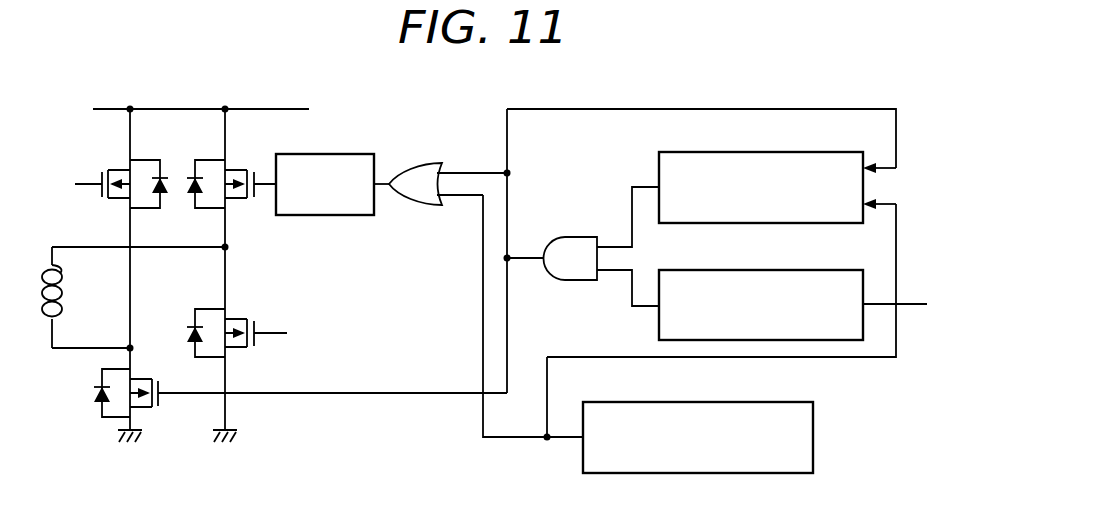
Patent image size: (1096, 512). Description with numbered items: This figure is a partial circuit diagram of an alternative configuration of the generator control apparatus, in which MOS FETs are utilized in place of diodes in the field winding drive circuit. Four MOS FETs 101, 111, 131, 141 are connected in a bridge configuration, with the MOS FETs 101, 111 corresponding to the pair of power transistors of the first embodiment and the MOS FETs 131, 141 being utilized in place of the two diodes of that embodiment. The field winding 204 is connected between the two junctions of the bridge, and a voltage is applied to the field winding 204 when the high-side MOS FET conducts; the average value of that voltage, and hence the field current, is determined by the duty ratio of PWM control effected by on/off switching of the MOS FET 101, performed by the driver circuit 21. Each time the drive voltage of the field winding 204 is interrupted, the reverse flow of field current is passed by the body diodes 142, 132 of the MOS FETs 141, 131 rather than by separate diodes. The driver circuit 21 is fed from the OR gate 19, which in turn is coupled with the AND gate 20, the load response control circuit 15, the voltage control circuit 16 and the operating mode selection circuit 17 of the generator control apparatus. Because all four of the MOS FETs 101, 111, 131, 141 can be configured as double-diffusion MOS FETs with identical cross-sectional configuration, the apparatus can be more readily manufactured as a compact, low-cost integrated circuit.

The MOS FET 141 is at (127, 169).
The MOS FET 101 is at (229, 169).
The body diode 142 is at (164, 197).
The field winding 204 is at (63, 290).
The body diode 132 is at (193, 324).
The MOS FET 131 is at (229, 318).
The MOS FET 111 is at (143, 377).
The driver circuit 21 is at (334, 154).
The OR gate 19 is at (418, 163).
The AND gate 20 is at (575, 236).
The load response control circuit 15 is at (815, 152).
The voltage control circuit 16 is at (815, 270).
The operating mode selection circuit 17 is at (750, 402).